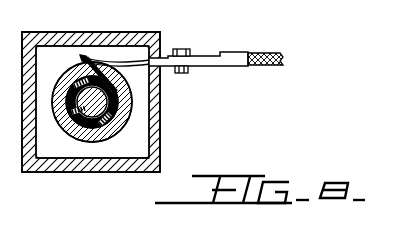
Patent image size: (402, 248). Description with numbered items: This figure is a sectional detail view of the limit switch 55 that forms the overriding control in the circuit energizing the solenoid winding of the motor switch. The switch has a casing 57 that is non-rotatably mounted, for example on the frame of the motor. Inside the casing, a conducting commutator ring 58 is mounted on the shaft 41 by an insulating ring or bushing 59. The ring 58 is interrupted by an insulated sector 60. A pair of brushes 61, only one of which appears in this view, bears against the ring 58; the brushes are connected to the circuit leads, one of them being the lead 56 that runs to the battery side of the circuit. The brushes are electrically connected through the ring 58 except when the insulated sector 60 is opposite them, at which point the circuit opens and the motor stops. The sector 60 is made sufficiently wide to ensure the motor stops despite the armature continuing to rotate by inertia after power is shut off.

The shaft 41 is at (64, 118).
The limit switch 55 is at (160, 115).
The lead 56 is at (252, 53).
The casing 57 is at (160, 138).
The conducting commutator ring 58 is at (106, 133).
The insulating ring or bushing 59 is at (72, 128).
The insulated sector 60 is at (121, 73).
The brushes 61 is at (83, 55).